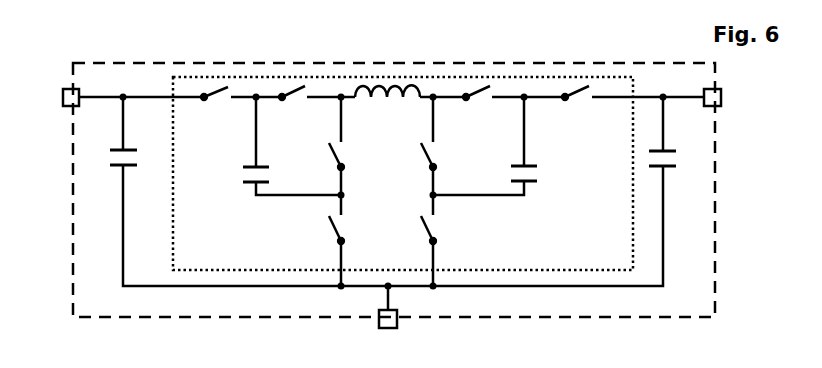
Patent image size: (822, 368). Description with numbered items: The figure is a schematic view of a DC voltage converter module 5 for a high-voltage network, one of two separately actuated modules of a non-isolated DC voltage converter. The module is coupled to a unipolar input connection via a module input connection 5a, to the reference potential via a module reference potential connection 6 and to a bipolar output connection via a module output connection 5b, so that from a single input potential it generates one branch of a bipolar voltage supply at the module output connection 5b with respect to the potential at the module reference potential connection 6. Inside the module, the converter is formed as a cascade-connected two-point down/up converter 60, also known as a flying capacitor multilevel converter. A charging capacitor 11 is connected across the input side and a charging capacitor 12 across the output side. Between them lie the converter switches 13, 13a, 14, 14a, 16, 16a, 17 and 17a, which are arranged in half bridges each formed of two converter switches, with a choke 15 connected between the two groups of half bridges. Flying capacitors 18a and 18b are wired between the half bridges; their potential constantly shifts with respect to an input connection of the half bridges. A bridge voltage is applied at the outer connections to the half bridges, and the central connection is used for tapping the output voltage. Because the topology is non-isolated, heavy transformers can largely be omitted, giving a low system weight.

The DC voltage converter module 5 is at (715, 268).
The module input connection 5a is at (62, 100).
The module output connection 5b is at (722, 97).
The module reference potential connection 6 is at (398, 325).
The charging capacitor 11 is at (130, 150).
The charging capacitor 12 is at (670, 151).
The converter switch 13 is at (298, 101).
The converter switch 13a is at (218, 103).
The converter switch 14 is at (343, 153).
The converter switch 14a is at (343, 228).
The choke 15 is at (378, 100).
The converter switch 16 is at (484, 100).
The converter switch 16a is at (582, 99).
The converter switch 17 is at (435, 153).
The converter switch 17a is at (435, 228).
The flying capacitor 18a is at (245, 183).
The flying capacitor 18b is at (536, 183).
The cascade-connected two-point down/up converter 60 is at (607, 272).